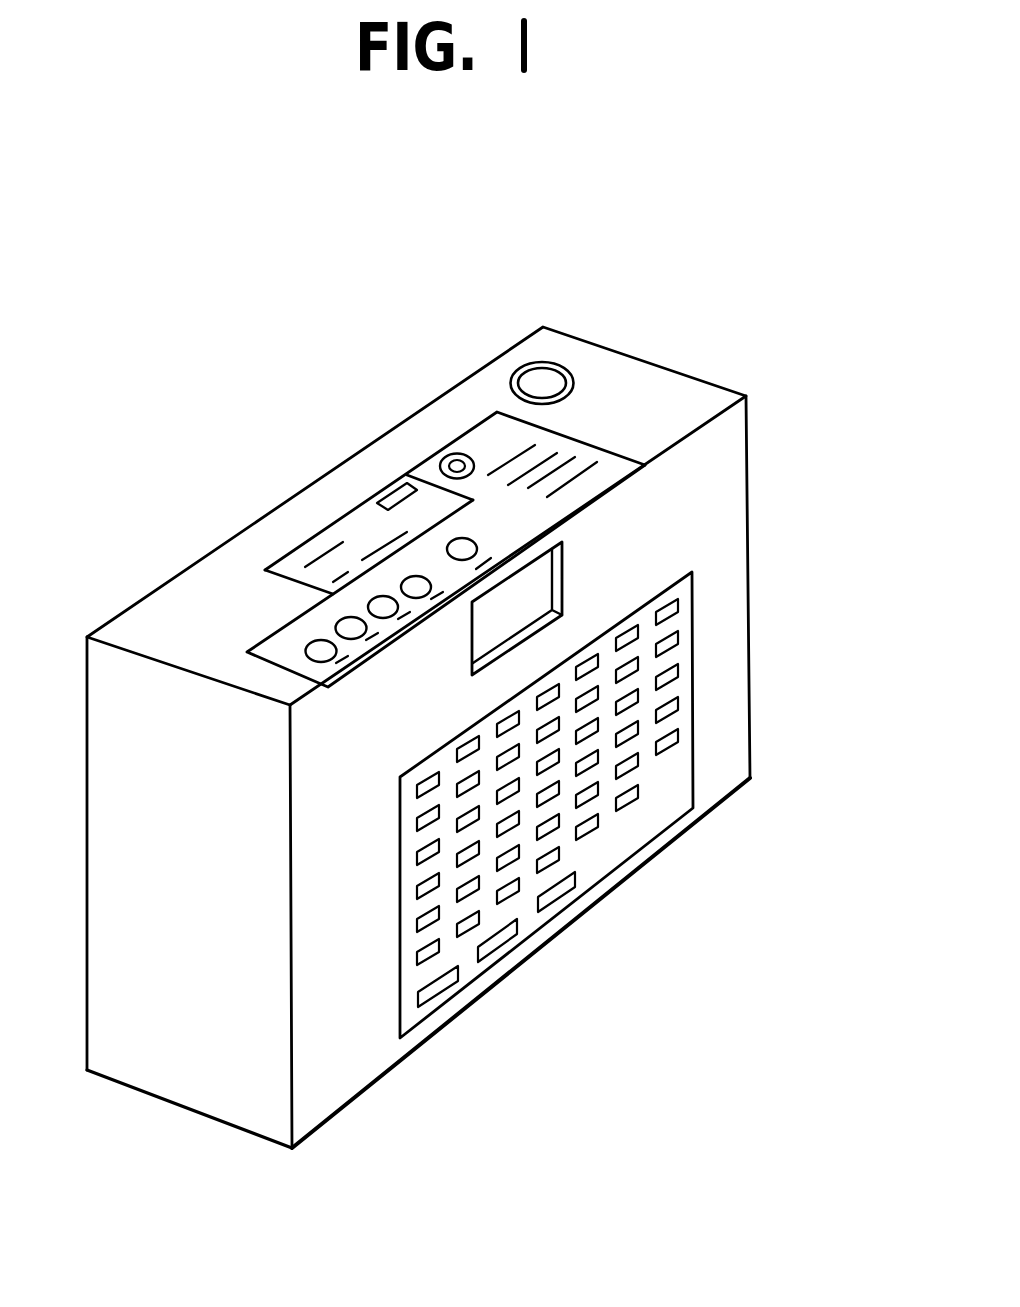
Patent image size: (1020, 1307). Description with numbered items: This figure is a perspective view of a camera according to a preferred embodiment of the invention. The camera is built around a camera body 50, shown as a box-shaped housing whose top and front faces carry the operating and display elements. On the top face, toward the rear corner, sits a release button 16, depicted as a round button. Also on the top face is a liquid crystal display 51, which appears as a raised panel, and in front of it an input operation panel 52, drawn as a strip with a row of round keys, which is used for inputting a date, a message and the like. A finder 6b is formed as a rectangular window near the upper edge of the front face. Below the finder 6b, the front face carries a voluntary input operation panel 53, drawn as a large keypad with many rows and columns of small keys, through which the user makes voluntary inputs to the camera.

The camera body 50 is at (648, 382).
The release button 16 is at (538, 382).
The liquid crystal display 51 is at (353, 527).
The input operation panel 52 is at (288, 645).
The finder 6b is at (535, 593).
The voluntary input operation panel 53 is at (600, 858).